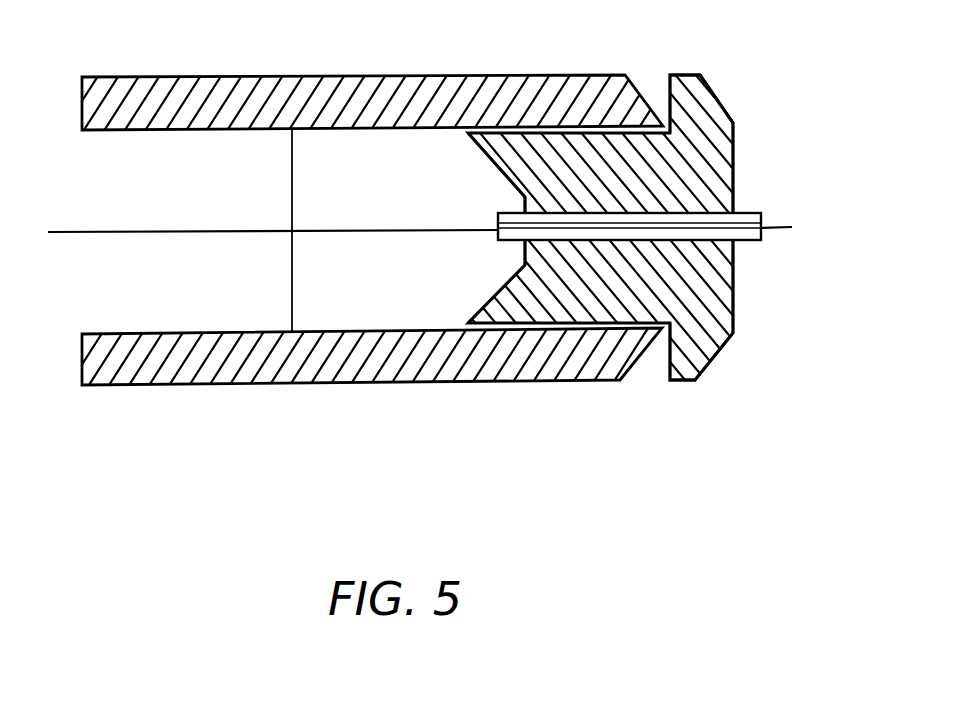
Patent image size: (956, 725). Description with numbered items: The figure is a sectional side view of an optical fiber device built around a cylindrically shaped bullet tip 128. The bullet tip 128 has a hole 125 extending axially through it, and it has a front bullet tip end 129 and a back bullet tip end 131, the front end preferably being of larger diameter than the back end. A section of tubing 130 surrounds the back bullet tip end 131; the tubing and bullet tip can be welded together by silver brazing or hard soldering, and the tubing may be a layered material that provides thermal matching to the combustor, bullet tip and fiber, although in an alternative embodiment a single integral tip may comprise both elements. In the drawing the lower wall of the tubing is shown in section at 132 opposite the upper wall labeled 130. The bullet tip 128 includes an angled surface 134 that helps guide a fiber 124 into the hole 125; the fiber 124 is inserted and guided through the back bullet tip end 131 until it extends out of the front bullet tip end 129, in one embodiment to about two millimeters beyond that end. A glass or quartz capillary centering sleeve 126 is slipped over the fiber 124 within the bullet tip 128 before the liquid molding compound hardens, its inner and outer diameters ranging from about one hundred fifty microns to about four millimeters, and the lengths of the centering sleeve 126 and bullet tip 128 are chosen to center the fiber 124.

The fiber 124 is at (60, 231).
The hole 125 is at (514, 208).
The centering sleeve 126 is at (762, 211).
The bullet tip 128 is at (722, 101).
The front bullet tip end 129 is at (705, 73).
The tubing 130 is at (578, 88).
The back bullet tip end 131 is at (527, 322).
The outer tube lower wall 132 is at (350, 295).
The angled surface 134 is at (527, 197).